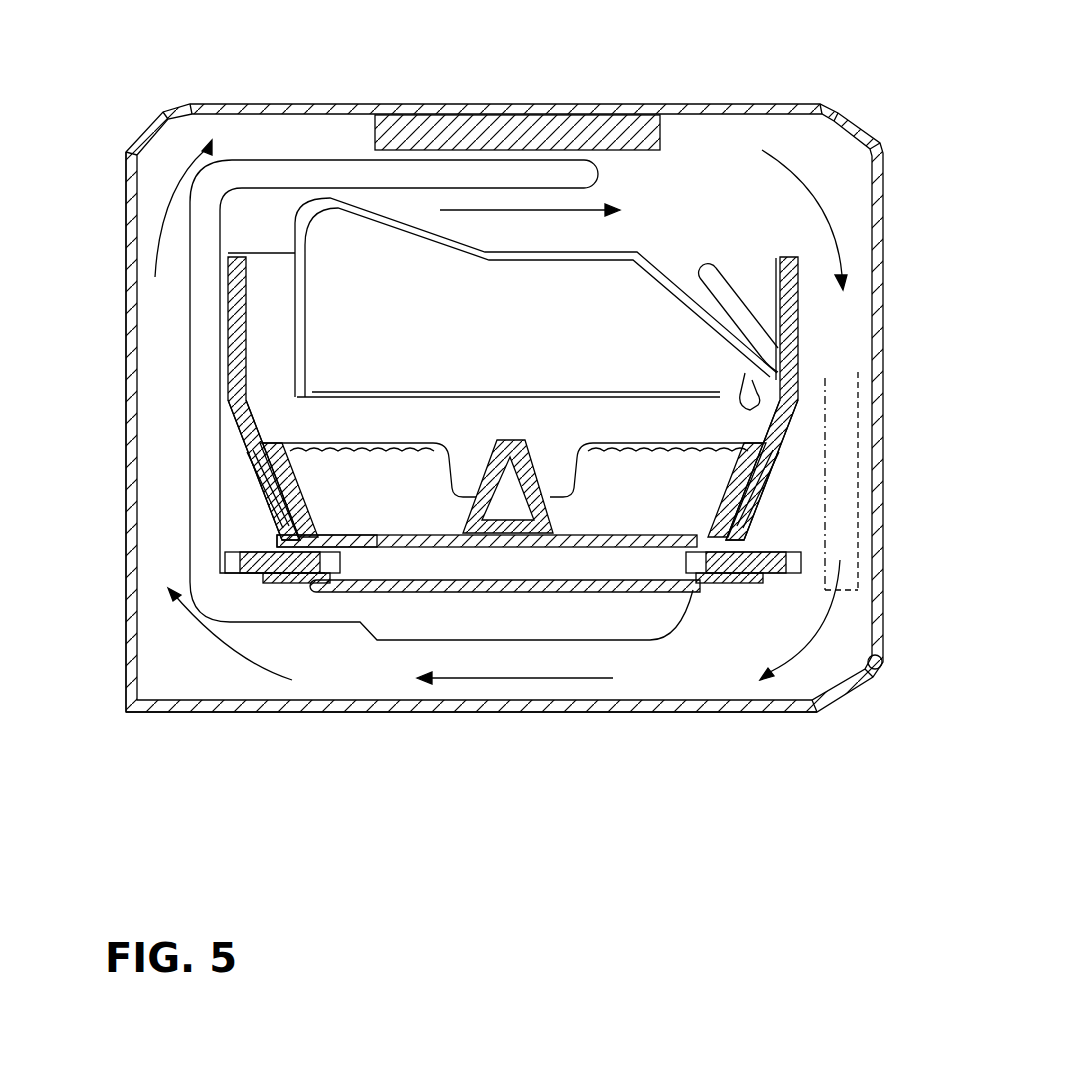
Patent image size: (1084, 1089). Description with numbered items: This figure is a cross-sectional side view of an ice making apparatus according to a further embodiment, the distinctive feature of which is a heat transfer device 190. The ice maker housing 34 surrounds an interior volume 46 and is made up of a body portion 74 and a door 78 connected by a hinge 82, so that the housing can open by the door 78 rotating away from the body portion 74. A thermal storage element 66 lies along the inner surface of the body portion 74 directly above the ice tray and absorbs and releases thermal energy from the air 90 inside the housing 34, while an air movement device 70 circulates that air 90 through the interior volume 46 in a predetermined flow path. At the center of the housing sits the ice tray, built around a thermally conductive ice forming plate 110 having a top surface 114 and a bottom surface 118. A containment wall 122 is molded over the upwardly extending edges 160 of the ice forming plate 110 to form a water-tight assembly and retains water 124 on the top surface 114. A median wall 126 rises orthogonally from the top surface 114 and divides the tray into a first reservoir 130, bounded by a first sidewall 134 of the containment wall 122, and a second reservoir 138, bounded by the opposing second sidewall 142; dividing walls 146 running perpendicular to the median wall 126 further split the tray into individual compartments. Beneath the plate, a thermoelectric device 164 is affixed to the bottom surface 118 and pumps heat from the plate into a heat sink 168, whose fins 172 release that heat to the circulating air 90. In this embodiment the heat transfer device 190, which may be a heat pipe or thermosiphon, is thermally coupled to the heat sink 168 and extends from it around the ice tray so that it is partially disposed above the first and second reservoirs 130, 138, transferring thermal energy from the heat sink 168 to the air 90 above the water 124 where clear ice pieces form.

The ice maker housing 34 is at (440, 100).
The interior volume 46 is at (300, 132).
The thermal storage element 66 is at (593, 135).
The air movement device 70 is at (880, 560).
The body portion 74 is at (125, 290).
The door 78 is at (493, 714).
The hinge 82 is at (883, 667).
The air 90 is at (826, 208).
The ice forming plate 110 is at (680, 522).
The top surface 114 is at (273, 520).
The bottom surface 118 is at (345, 532).
The containment wall 122 is at (225, 350).
The water 124 is at (410, 530).
The median wall 126 is at (637, 260).
The first reservoir 130 is at (470, 462).
The first sidewall 134 is at (253, 500).
The second reservoir 138 is at (722, 380).
The second sidewall 142 is at (767, 515).
The dividing walls 146 is at (322, 438).
The upwardly extending edges 160 is at (247, 478).
The thermoelectric device 164 is at (267, 558).
The heat sink 168 is at (686, 585).
The fins 172 is at (495, 624).
The heat transfer device 190 is at (247, 177).